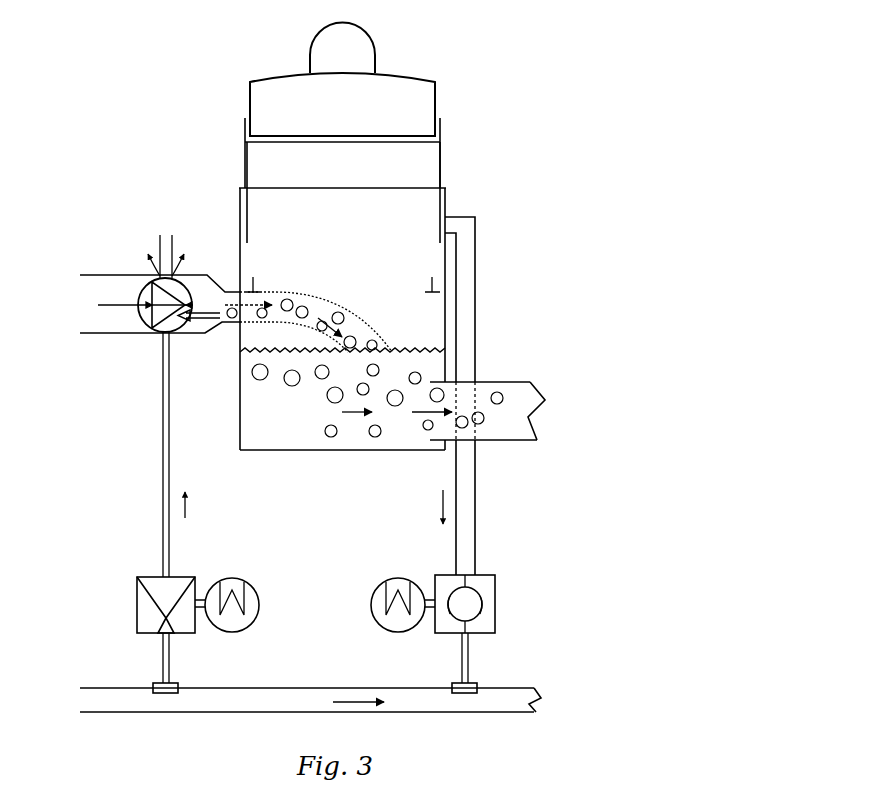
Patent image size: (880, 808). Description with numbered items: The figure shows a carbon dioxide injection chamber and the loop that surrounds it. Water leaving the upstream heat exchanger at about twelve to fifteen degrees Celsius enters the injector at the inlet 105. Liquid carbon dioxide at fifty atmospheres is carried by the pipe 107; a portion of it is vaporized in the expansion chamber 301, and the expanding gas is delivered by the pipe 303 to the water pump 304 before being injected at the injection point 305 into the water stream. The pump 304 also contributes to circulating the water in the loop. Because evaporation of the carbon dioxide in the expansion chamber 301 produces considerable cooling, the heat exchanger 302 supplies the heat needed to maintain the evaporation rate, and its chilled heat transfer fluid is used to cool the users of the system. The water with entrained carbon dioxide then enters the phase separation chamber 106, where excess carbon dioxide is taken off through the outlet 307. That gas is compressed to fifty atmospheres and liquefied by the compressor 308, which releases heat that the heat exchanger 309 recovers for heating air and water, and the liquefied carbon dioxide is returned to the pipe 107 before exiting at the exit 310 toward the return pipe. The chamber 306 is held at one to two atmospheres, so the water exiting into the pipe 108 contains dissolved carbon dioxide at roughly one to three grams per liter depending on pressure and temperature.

The injector inlet 105 is at (118, 274).
The phase separation chamber 106 is at (116, 116).
The pipe 107 is at (104, 688).
The pipe 108 is at (528, 382).
The expansion chamber 301 is at (140, 576).
The heat exchanger 302 is at (260, 610).
The pipe 303 is at (162, 442).
The water pump 304 is at (152, 330).
The injection point 305 is at (210, 332).
The chamber 306 is at (332, 452).
The outlet 307 is at (478, 333).
The compressor 308 is at (498, 592).
The heat exchanger 309 is at (382, 588).
The exit 310 is at (534, 688).